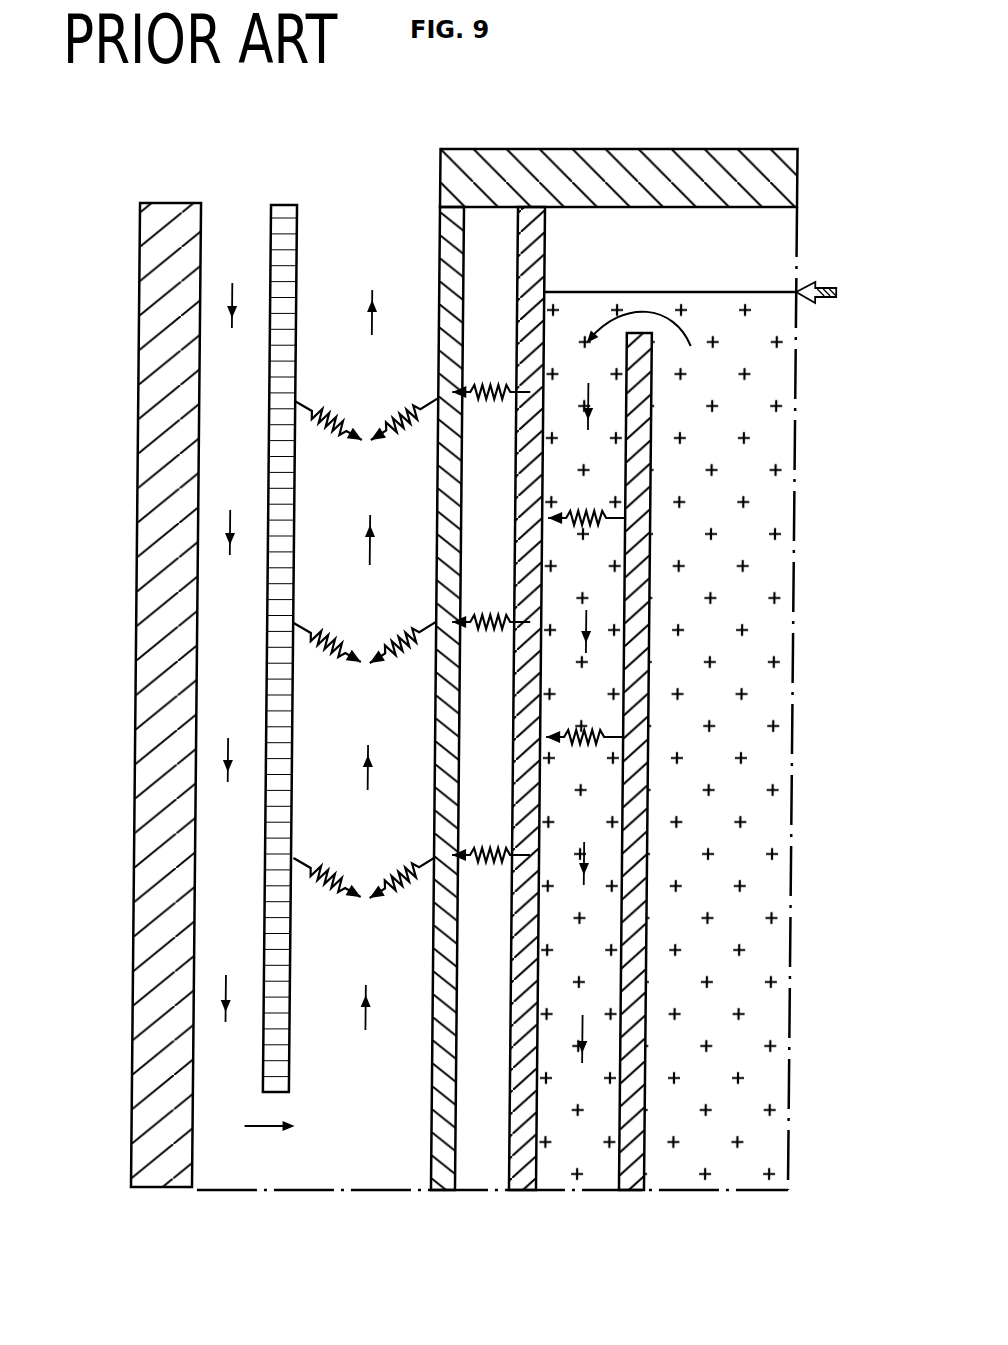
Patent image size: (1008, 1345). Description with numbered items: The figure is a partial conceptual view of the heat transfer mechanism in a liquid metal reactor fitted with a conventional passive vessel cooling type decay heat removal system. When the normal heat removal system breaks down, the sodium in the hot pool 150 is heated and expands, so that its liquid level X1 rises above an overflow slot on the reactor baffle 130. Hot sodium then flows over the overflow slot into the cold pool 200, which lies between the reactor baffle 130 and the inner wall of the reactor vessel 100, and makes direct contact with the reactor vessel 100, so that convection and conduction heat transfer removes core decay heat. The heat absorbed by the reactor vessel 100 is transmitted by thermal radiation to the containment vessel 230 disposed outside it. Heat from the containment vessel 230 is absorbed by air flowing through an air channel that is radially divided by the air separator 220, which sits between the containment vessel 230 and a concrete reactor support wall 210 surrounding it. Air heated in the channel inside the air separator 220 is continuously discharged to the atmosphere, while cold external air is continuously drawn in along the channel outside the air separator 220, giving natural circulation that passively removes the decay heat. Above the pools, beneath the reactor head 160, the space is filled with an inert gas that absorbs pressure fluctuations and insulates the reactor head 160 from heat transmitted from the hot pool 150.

The reactor vessel 100 is at (523, 1160).
The reactor baffle 130 is at (657, 575).
The hot pool 150 is at (750, 848).
The reactor head 160 is at (690, 187).
The cold pool 200 is at (585, 1150).
The outer plate 210 is at (168, 1093).
The air separator 220 is at (263, 938).
The containment vessel 230 is at (434, 1162).
The liquid level X1 is at (709, 292).